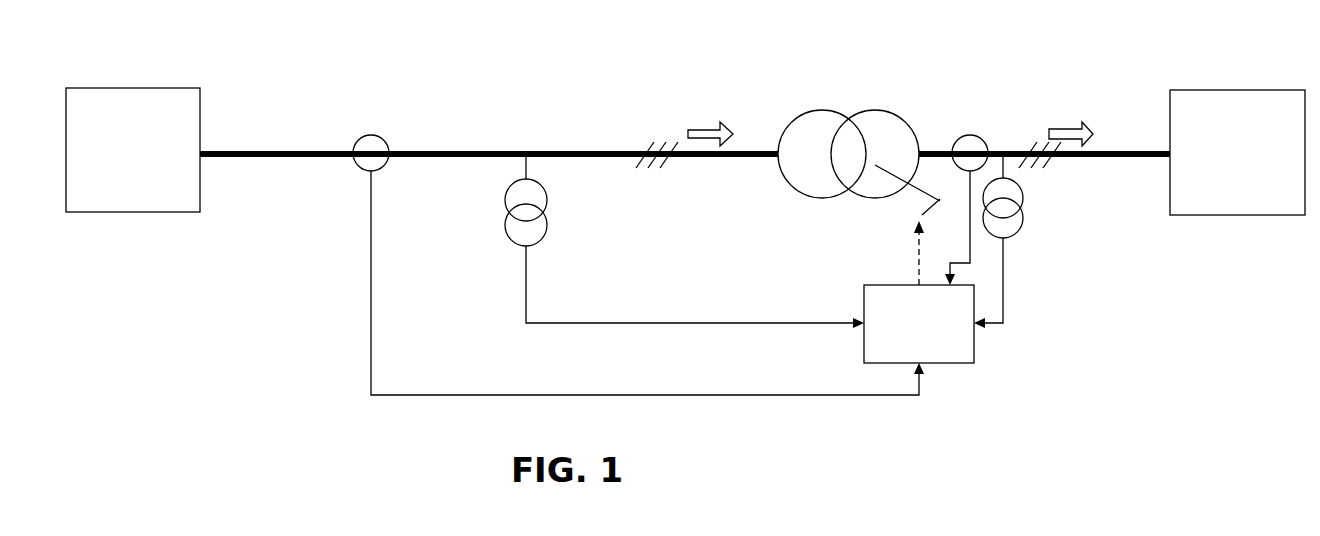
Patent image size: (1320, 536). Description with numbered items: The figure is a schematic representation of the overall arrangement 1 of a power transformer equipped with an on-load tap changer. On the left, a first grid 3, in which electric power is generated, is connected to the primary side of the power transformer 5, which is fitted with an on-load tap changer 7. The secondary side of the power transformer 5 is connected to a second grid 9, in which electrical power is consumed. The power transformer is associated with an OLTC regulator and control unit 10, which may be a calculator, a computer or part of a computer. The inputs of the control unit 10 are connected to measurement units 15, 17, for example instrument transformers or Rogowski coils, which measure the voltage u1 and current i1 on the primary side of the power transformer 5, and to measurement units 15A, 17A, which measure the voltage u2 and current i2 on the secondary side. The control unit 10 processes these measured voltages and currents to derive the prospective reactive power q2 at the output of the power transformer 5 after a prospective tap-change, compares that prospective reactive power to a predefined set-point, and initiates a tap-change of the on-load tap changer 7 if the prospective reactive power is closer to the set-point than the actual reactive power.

The power transmission system 1 is at (549, 105).
The first grid 3 is at (143, 89).
The power transformer 5 is at (828, 110).
The on-load tap changer 7 is at (900, 197).
The second grid 9 is at (1217, 222).
The OLTC regulator and control unit 10 is at (960, 366).
The measurement unit 15 is at (498, 202).
The measurement unit 15A is at (1018, 242).
The measurement unit 17 is at (353, 168).
The measurement unit 17A is at (983, 123).